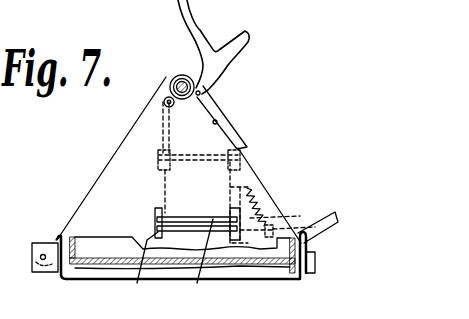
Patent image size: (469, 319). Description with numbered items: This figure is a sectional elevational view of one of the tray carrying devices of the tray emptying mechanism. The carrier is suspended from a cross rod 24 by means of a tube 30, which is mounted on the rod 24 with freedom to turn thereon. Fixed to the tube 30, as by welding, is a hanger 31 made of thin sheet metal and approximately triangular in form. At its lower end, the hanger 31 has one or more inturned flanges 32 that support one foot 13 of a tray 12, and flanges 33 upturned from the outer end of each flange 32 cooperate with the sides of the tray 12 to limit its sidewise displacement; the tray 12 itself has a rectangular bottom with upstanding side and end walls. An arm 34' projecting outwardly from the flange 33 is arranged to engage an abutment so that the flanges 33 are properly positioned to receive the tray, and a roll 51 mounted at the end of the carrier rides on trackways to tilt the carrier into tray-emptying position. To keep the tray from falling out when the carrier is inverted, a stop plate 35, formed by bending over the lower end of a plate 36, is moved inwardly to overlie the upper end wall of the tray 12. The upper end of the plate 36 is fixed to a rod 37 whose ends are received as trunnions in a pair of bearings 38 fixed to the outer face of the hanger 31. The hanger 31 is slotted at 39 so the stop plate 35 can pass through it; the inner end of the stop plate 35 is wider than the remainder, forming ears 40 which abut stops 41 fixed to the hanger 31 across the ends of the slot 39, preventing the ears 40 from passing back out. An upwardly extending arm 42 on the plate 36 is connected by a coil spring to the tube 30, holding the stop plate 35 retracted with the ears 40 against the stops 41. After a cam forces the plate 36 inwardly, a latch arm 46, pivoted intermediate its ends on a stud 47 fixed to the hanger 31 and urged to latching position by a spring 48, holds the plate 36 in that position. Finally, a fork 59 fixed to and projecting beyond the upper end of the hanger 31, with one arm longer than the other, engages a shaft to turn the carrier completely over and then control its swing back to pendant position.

The fork 59 is at (223, 40).
The cross rod 24 is at (181, 76).
The tube 30 is at (168, 83).
The bearings 38 is at (160, 155).
The hanger 31 is at (100, 174).
The arm 42 is at (163, 117).
The rod 37 is at (193, 157).
The plate 36 is at (235, 185).
The spring 48 is at (265, 202).
The stud 47 is at (274, 225).
The latch arm 46 is at (312, 218).
The inturned flange 32 is at (90, 278).
The foot 13 is at (85, 268).
The tray 12 is at (103, 236).
The flange 33 is at (315, 257).
The arm 34' is at (336, 284).
The roll 51 is at (33, 276).
The ears 40 is at (152, 225).
The stop plate 35 is at (177, 217).
The slot 39 is at (197, 222).
The stops 41 is at (165, 260).